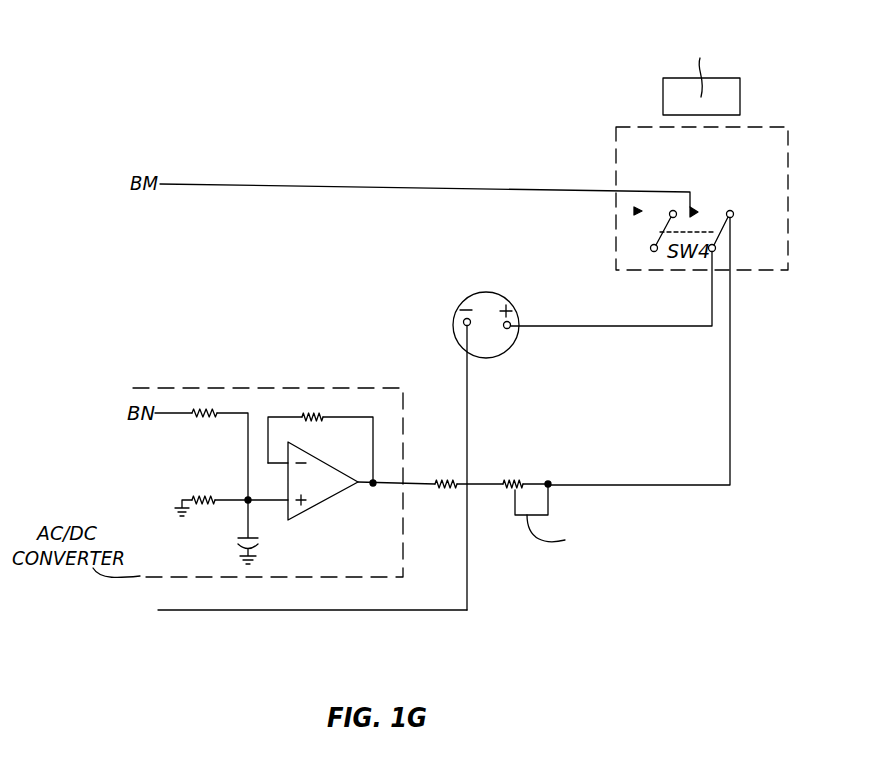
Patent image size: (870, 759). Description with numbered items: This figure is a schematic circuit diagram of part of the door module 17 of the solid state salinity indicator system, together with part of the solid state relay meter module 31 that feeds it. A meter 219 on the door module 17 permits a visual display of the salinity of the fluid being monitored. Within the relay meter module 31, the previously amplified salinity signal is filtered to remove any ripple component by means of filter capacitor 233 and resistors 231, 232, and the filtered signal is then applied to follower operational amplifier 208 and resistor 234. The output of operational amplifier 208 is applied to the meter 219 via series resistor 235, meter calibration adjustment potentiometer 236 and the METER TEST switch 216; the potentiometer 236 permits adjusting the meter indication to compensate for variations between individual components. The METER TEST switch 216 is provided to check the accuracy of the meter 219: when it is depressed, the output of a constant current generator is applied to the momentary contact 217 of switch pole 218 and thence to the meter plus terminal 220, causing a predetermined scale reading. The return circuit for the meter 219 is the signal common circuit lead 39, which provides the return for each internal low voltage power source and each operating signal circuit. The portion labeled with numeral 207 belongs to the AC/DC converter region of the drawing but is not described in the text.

The door module 17 is at (525, 163).
The solid state relay meter module 31 is at (268, 457).
The METER TEST switch 216 is at (746, 96).
The momentary contact 217 is at (697, 205).
The switch pole 218 is at (722, 212).
The meter 219 is at (512, 294).
The meter (plus) terminal 220 is at (517, 322).
The resistor 231 is at (199, 421).
The resistor 232 is at (207, 493).
The filter capacitor 233 is at (267, 548).
The resistor 234 is at (318, 423).
The series resistor 235 is at (439, 476).
The meter calibration adjustment potentiometer 236 is at (511, 475).
The follower operational amplifier 208 is at (335, 499).
The AC/DC converter 207 is at (336, 580).
The signal common circuit lead 39 is at (436, 605).